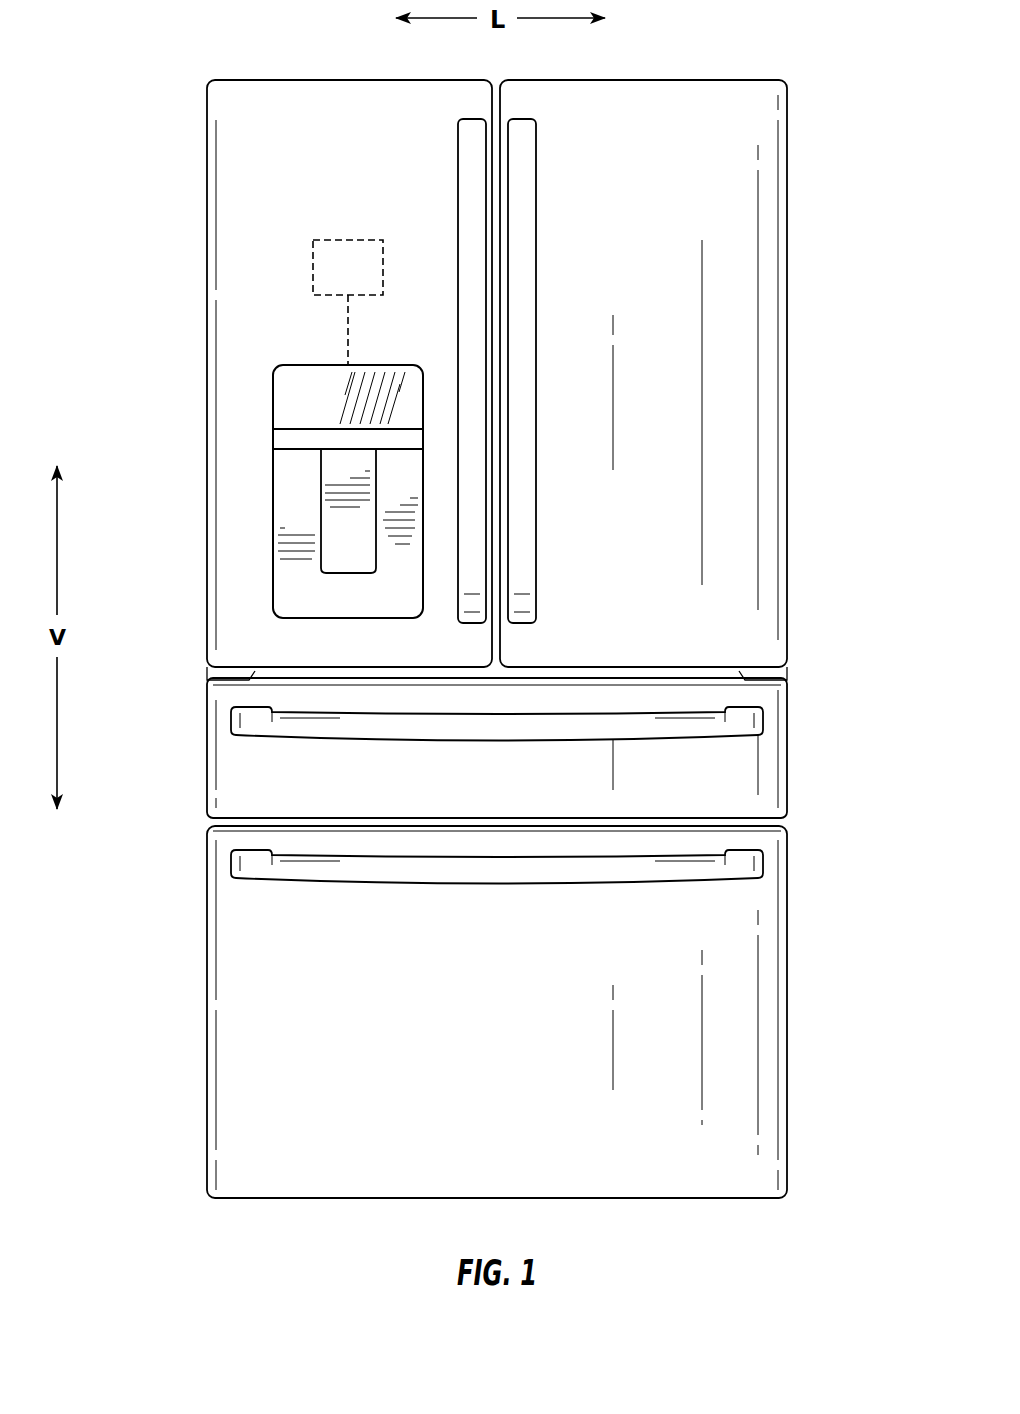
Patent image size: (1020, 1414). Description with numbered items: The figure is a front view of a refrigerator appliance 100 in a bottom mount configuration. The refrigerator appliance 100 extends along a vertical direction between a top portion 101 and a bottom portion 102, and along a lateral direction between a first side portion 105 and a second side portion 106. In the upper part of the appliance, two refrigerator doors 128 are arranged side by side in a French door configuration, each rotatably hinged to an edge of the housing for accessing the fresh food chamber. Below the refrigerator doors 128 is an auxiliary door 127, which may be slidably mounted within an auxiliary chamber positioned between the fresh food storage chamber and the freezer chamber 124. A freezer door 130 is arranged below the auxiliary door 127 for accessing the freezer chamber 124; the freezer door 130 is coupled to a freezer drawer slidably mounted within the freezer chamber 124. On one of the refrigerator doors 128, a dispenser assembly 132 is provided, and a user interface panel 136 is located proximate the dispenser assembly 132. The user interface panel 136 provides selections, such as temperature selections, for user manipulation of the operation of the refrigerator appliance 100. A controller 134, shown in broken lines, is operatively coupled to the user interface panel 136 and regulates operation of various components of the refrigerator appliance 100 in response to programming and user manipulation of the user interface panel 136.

The refrigerator appliance 100 is at (828, 177).
The top portion 101 is at (177, 60).
The bottom portion 102 is at (229, 1213).
The first side portion 105 is at (187, 981).
The second side portion 106 is at (795, 1089).
The freezer chamber 124 is at (655, 1150).
The auxiliary door 127 is at (735, 773).
The refrigerator doors 128 is at (230, 138).
The freezer door 130 is at (733, 948).
The dispenser assembly 132 is at (294, 517).
The controller 134 is at (313, 273).
The user interface panel 136 is at (280, 400).